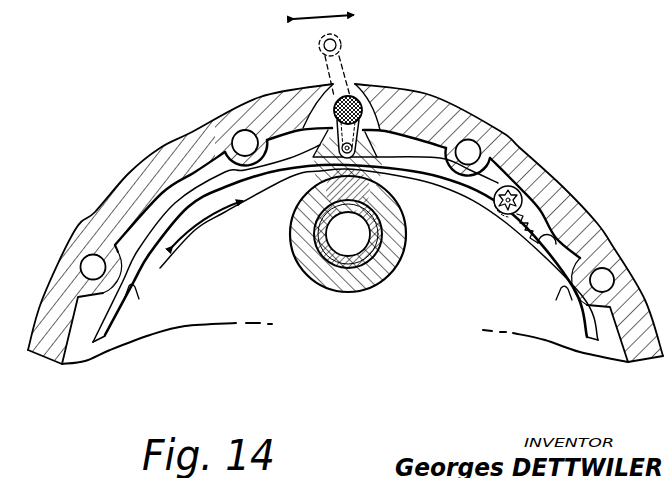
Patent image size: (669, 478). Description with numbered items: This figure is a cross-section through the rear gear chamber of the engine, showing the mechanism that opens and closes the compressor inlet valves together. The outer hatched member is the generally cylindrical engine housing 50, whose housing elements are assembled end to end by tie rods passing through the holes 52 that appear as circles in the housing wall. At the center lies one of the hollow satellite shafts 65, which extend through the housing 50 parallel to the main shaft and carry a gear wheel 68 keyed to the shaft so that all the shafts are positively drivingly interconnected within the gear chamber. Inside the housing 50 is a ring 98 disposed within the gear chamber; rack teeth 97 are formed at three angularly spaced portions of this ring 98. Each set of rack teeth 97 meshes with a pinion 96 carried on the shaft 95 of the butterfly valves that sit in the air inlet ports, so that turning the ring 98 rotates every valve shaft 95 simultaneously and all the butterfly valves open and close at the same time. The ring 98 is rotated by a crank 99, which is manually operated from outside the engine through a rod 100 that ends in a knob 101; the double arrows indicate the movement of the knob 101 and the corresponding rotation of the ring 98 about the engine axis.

The engine housing 50 is at (550, 176).
The hole 52 is at (470, 152).
The hollow satellite shaft 65 is at (392, 277).
The gear wheel 68 is at (397, 250).
The butterfly valve shaft 95 is at (497, 212).
The pinion 96 is at (513, 220).
The rack teeth 97 is at (550, 246).
The ring 98 is at (445, 180).
The crank 99 is at (395, 115).
The rod 100 is at (356, 97).
The knob 101 is at (343, 43).